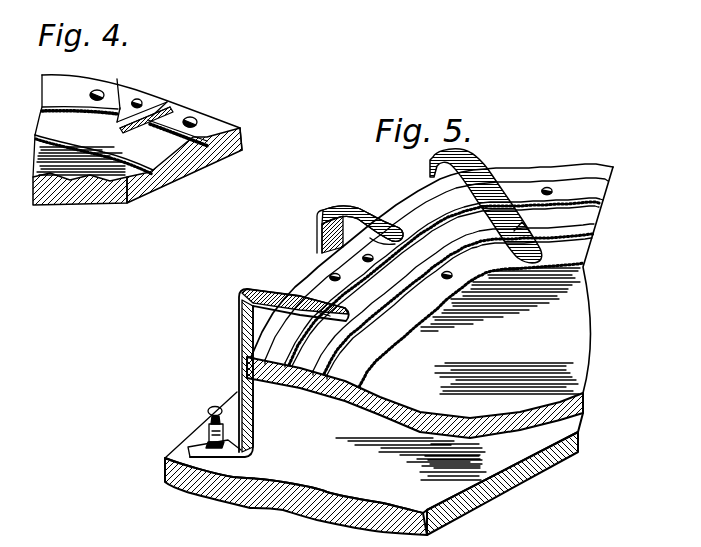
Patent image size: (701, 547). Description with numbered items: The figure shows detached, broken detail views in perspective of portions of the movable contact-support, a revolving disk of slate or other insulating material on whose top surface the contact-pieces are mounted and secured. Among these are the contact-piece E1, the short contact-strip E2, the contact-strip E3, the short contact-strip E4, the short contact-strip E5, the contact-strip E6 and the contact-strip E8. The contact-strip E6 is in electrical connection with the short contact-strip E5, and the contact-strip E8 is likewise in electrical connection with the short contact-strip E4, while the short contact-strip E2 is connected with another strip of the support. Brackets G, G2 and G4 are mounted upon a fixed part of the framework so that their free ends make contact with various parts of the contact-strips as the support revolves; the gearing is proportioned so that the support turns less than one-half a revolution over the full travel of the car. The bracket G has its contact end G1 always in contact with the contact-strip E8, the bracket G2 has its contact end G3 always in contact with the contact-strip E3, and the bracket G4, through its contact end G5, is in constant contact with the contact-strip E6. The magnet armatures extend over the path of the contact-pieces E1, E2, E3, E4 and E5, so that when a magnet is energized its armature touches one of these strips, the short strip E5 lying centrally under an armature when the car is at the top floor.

In FIG. 4, the contact-piece E1 is at (150, 193).
In FIG. 5, the contact-piece E1 is at (350, 373).
In FIG. 4, the short contact-strip E2 is at (202, 125).
In FIG. 5, the contact-strip E3 is at (507, 183).
In FIG. 4, the short contact-strip E4 is at (80, 88).
In FIG. 4, the short contact-strip E5 is at (153, 102).
In FIG. 4, the contact-strip E6 is at (160, 147).
In FIG. 5, the contact-strip E6 is at (583, 220).
In FIG. 5, the contact-strip E8 is at (568, 256).
In FIG. 5, the bracket G is at (450, 150).
In FIG. 5, the contact end G1 is at (520, 227).
In FIG. 5, the bracket G2 is at (316, 235).
In FIG. 5, the contact end G3 is at (380, 222).
In FIG. 5, the bracket G4 is at (238, 338).
In FIG. 5, the contact end G5 is at (317, 315).